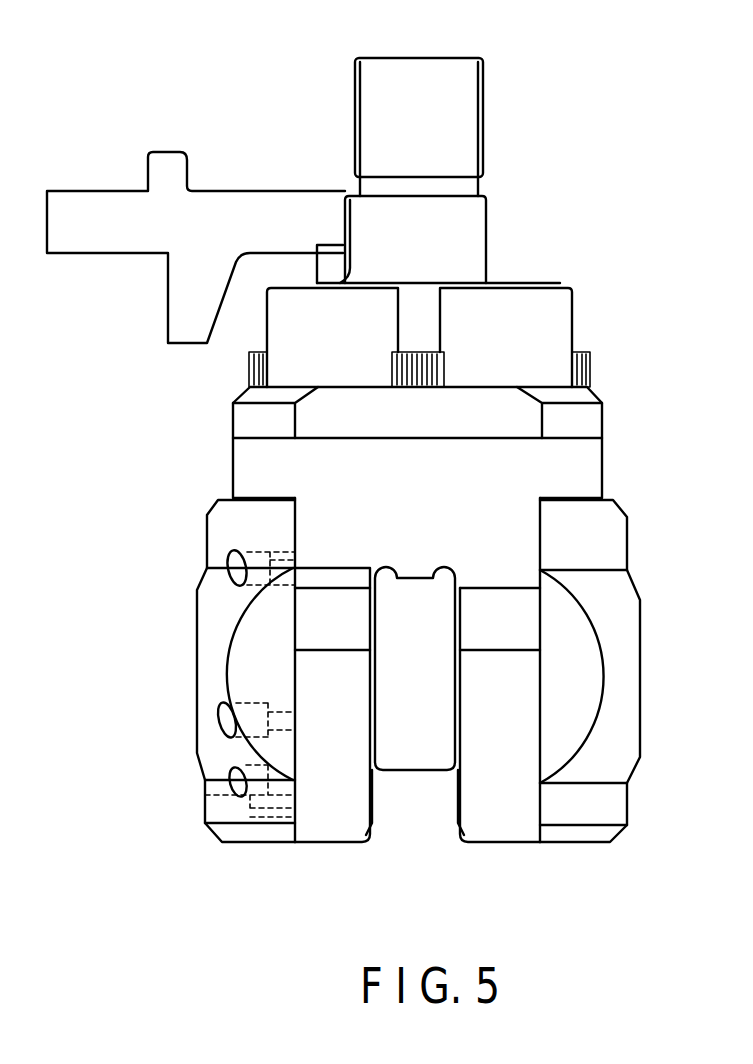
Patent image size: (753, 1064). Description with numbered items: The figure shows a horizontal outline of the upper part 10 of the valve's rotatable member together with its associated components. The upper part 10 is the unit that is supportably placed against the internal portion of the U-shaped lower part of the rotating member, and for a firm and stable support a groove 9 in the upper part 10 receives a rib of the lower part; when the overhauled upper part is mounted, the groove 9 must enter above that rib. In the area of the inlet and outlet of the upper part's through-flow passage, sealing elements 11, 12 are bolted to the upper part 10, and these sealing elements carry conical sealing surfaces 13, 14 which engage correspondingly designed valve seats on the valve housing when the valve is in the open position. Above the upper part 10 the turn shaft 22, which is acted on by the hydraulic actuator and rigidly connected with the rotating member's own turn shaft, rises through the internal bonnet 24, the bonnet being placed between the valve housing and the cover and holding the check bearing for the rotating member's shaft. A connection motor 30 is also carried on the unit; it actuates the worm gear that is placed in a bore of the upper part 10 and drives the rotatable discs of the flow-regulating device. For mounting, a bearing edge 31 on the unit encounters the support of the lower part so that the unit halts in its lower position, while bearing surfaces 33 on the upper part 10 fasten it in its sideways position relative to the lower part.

The groove 9 is at (372, 807).
The upper part 10 is at (585, 455).
The sealing element 11 is at (588, 642).
The sealing element 12 is at (262, 605).
The conical sealing surface 13 is at (617, 582).
The conical sealing surface 14 is at (205, 623).
The turn shaft 22 is at (378, 66).
The internal bonnet 24 is at (104, 199).
The connection motor 30 is at (282, 320).
The bearing edge 31 is at (413, 576).
The bearing surfaces 33 is at (325, 600).